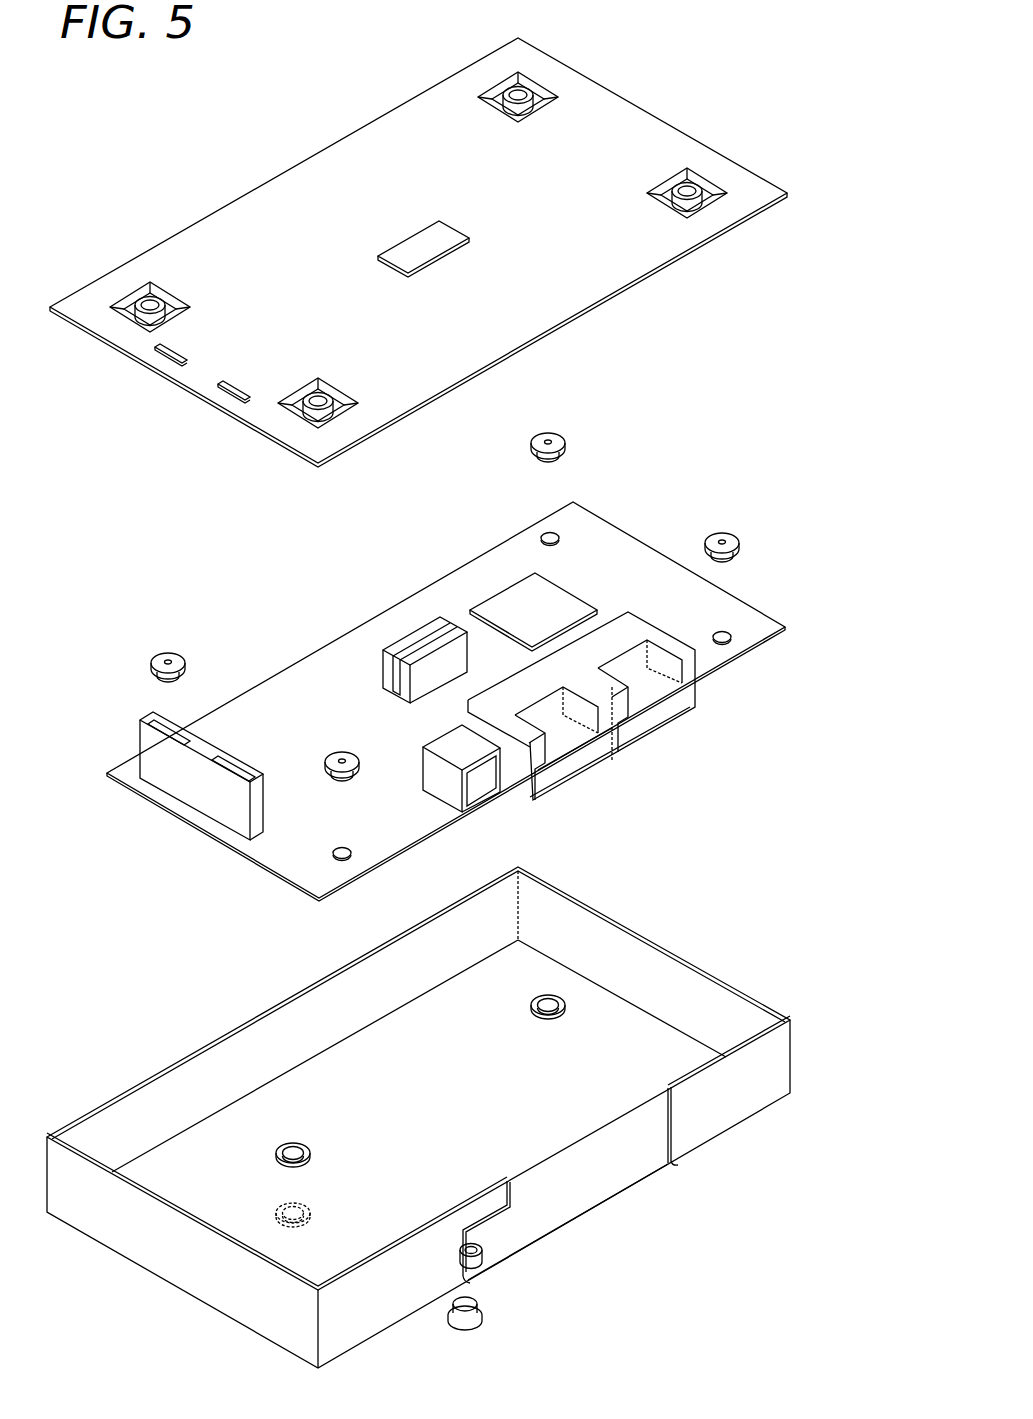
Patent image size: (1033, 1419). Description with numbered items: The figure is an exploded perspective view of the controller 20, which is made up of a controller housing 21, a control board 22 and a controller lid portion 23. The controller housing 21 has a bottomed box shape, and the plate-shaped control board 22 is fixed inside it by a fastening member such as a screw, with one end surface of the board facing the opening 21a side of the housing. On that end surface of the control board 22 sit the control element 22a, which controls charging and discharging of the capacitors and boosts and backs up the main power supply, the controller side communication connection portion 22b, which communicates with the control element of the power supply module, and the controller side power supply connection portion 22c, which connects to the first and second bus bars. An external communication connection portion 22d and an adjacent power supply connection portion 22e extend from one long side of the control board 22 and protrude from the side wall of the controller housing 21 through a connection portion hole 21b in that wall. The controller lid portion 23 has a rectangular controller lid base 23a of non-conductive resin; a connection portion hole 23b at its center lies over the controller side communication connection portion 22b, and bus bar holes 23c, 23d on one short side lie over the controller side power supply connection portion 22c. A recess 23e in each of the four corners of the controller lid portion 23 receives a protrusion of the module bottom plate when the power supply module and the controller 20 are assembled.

The controller 20 is at (820, 96).
The controller housing 21 is at (660, 935).
The opening 21a is at (178, 1058).
The connection portion hole 21b is at (672, 1163).
The control board 22 is at (670, 525).
The control element 22a is at (518, 594).
The controller side communication connection portion 22b is at (405, 633).
The controller side power supply connection portion 22c is at (175, 722).
The external communication connection portion 22d is at (482, 790).
The power supply connection portion 22e is at (625, 732).
The controller lid portion 23 is at (658, 100).
The controller lid base 23a is at (313, 183).
The connection portion hole 23b is at (420, 243).
The bus bar hole 23c is at (151, 345).
The bus bar hole 23d is at (214, 382).
The recess 23e is at (298, 430).